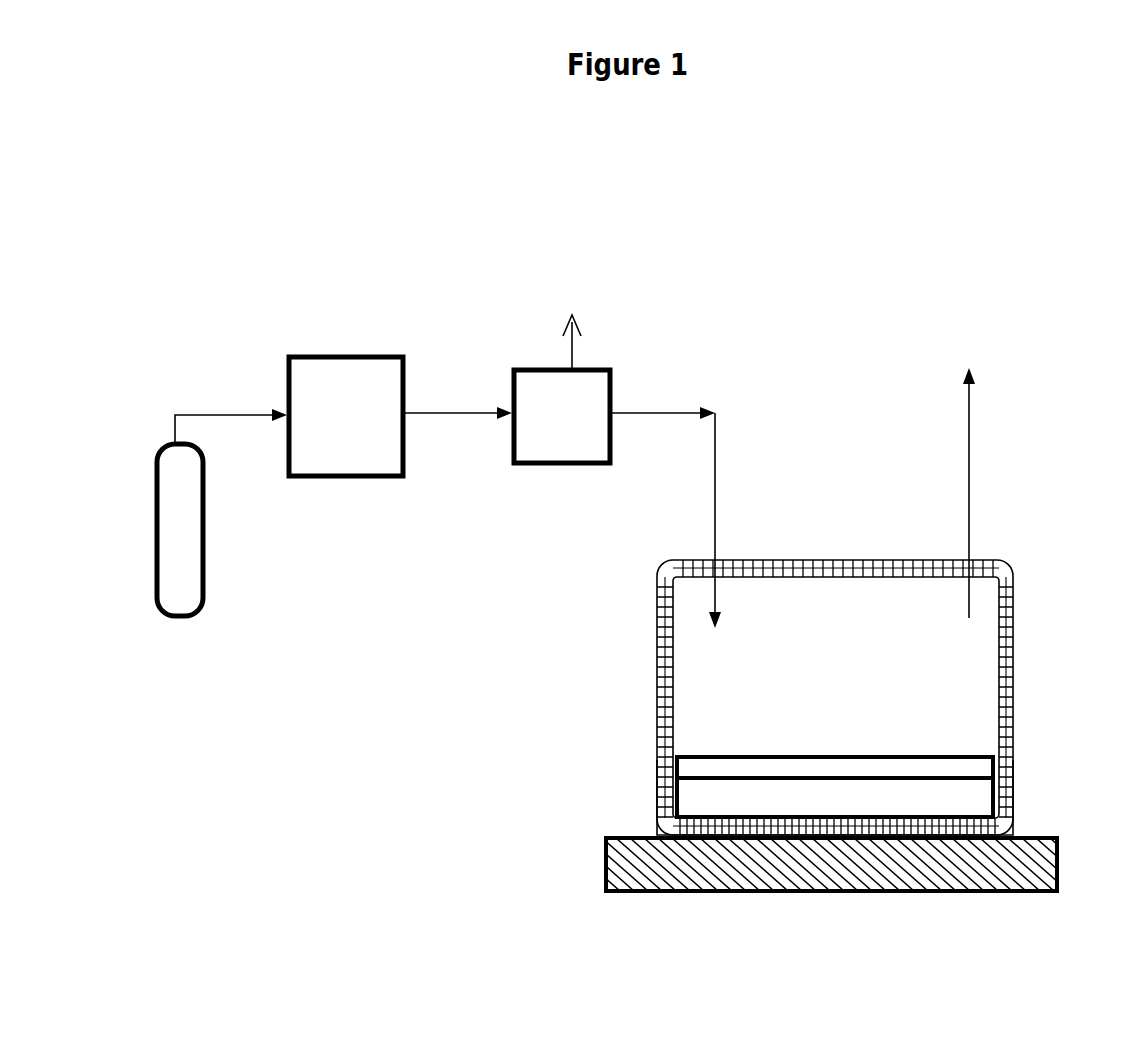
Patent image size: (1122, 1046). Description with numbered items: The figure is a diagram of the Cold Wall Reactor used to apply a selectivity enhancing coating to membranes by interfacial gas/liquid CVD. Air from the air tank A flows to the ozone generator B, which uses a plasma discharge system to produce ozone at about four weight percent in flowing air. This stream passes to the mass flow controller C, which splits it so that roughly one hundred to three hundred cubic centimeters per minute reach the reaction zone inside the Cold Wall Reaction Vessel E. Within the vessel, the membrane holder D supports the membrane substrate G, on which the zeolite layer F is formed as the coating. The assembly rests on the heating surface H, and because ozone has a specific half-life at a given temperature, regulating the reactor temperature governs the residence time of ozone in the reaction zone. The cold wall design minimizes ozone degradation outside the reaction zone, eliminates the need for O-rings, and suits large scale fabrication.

The air tank A is at (222, 512).
The ozone generator B is at (400, 416).
The mass flow controller C is at (617, 471).
The membrane holder D is at (653, 808).
The Cold Wall Reaction Vessel E is at (646, 651).
The zeolite layer F is at (740, 756).
The membrane substrate G is at (835, 787).
The heating surface H is at (828, 864).